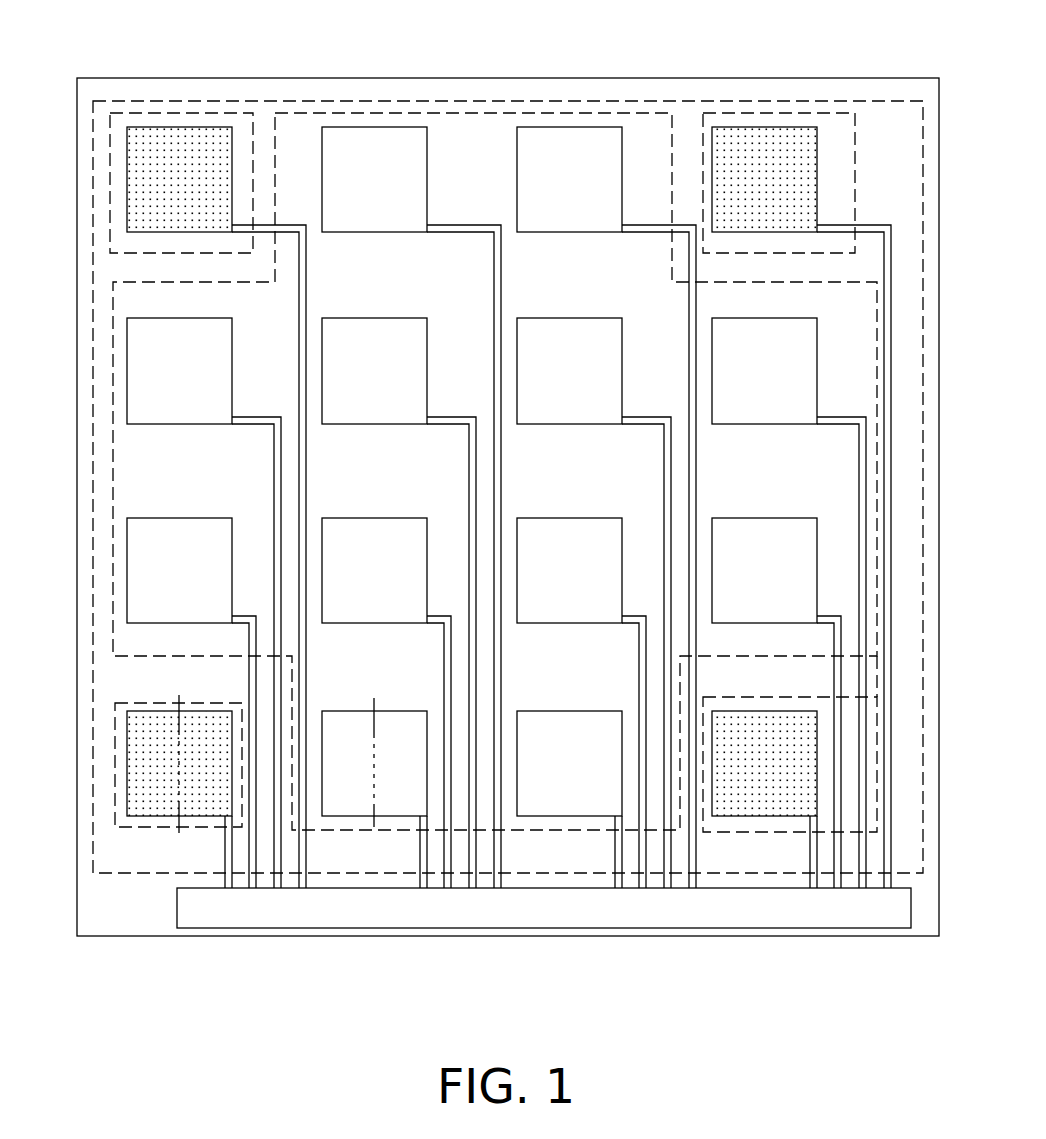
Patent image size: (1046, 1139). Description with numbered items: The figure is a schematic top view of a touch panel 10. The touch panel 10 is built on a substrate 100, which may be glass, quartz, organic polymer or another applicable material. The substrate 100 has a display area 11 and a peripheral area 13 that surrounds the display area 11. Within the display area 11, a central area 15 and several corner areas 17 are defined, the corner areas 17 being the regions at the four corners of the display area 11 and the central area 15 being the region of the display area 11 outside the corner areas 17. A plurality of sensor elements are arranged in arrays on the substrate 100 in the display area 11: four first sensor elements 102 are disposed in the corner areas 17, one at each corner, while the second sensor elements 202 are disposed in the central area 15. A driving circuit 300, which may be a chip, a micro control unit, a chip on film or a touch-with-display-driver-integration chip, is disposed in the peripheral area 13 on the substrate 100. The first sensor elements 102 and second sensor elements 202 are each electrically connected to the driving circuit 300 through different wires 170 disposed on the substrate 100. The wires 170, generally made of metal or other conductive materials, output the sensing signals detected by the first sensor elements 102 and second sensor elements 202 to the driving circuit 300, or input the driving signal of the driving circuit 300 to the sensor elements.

The touch panel 10 is at (88, 1011).
The display area 11 is at (832, 101).
The peripheral area 13 is at (921, 903).
The central area 15 is at (302, 112).
The corner areas 17 is at (115, 112).
The substrate 100 is at (617, 86).
The first sensor elements 102 is at (181, 127).
The wires 170 is at (225, 853).
The second sensor elements 202 is at (376, 128).
The driving circuit 300 is at (290, 918).